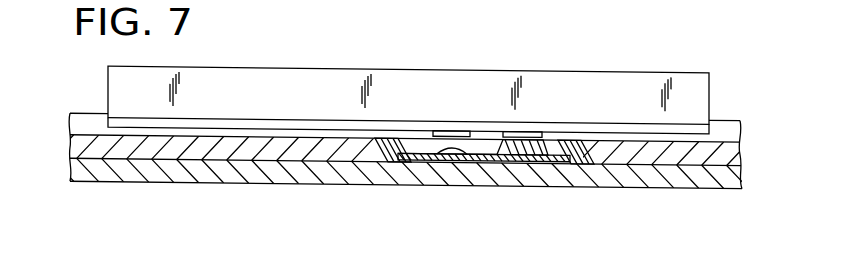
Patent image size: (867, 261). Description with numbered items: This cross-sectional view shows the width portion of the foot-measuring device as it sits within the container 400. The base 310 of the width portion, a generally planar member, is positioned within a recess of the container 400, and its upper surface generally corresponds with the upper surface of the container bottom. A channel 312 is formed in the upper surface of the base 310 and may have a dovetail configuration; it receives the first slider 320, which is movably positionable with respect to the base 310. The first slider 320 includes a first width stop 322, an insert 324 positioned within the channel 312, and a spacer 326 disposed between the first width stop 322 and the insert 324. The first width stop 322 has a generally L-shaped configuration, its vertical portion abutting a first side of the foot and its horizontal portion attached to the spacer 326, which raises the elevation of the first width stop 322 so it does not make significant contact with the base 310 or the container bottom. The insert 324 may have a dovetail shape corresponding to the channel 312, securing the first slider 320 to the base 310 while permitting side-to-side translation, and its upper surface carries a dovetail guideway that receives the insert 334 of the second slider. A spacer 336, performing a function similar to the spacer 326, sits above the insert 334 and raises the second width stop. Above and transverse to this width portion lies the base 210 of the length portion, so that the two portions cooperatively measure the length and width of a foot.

The base 210 is at (731, 121).
The base 310 is at (384, 160).
The channel 312 is at (444, 152).
The first slider 320 is at (596, 68).
The first width stop 322 is at (108, 90).
The insert 324 is at (417, 147).
The spacer 326 is at (460, 133).
The insert 334 is at (531, 160).
The spacer 336 is at (542, 135).
The container 400 is at (700, 197).